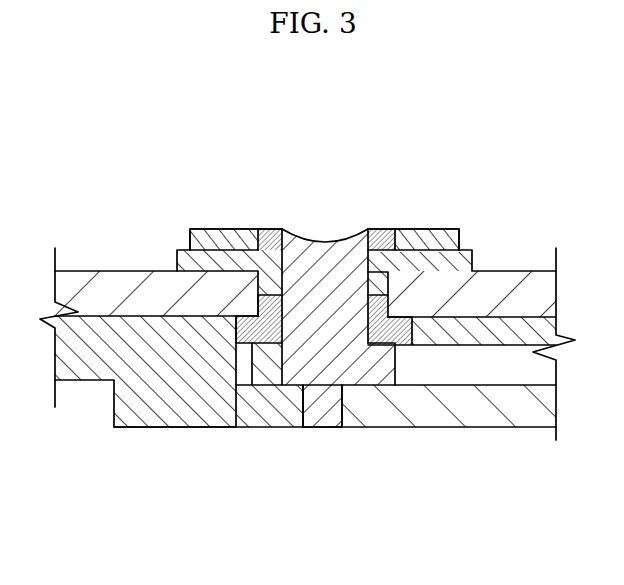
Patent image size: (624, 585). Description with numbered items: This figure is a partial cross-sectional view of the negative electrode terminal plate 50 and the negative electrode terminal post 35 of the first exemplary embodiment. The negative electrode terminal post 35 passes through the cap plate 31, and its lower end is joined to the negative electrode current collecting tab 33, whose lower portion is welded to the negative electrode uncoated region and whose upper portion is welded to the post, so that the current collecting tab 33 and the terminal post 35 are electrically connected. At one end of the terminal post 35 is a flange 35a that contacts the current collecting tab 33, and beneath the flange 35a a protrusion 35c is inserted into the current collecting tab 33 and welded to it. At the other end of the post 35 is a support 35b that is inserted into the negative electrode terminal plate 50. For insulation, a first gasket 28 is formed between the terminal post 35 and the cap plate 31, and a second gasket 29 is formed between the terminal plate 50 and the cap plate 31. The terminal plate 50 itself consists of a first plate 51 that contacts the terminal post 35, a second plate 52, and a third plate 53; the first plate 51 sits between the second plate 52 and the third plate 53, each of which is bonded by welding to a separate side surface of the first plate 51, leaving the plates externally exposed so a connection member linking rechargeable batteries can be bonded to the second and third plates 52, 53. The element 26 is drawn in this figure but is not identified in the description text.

The lower circuit board 26 is at (168, 408).
The first gasket 28 is at (258, 325).
The second gasket 29 is at (455, 263).
The cap plate 31 is at (108, 283).
The negative electrode current collecting tab 33 is at (478, 410).
The negative electrode terminal post 35 is at (313, 251).
The flange 35a is at (380, 363).
The support 35b is at (284, 228).
The protrusion 35c is at (322, 410).
The negative electrode terminal plate 50 is at (187, 221).
The first plate 51 is at (384, 240).
The second plate 52 is at (220, 238).
The third plate 53 is at (427, 240).